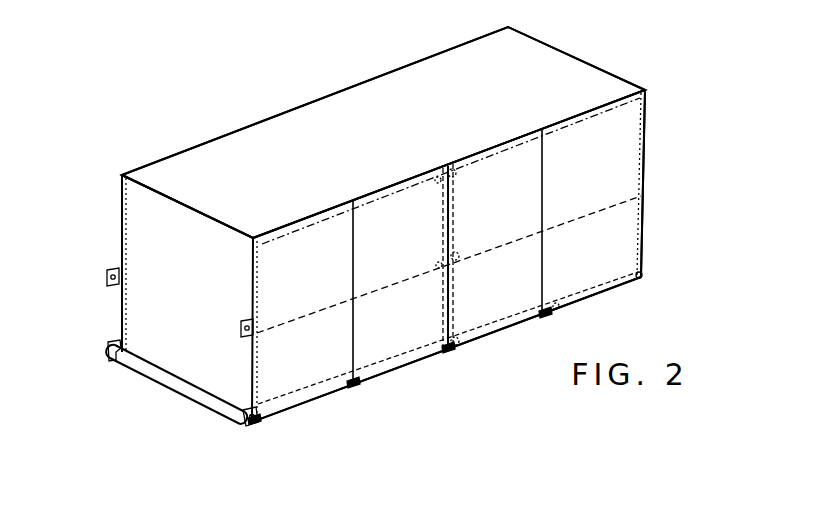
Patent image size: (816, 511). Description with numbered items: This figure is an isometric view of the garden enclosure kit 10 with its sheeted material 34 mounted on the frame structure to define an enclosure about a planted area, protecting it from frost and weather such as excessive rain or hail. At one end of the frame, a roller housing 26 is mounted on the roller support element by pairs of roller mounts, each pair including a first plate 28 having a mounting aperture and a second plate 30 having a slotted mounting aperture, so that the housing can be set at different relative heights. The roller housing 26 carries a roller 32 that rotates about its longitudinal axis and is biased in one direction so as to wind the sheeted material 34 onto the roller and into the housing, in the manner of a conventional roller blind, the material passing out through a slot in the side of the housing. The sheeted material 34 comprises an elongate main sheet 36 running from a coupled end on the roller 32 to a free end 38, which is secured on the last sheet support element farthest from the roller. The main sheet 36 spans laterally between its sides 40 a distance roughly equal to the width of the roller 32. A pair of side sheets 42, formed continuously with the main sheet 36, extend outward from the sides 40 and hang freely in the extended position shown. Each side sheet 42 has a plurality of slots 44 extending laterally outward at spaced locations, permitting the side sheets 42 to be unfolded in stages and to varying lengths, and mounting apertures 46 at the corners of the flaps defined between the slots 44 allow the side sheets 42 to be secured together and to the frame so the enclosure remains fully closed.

The garden enclosure kit 10 is at (700, 178).
The roller housing 26 is at (185, 388).
The first plate 28 is at (250, 426).
The second plate 30 is at (106, 348).
The roller 32 is at (253, 424).
The sheeted material 34 is at (347, 126).
The main sheet 36 is at (555, 84).
The free end 38 is at (646, 272).
The sides 40 is at (247, 127).
The side sheets 42 is at (402, 349).
The slots 44 is at (352, 247).
The mounting apertures 46 is at (438, 183).